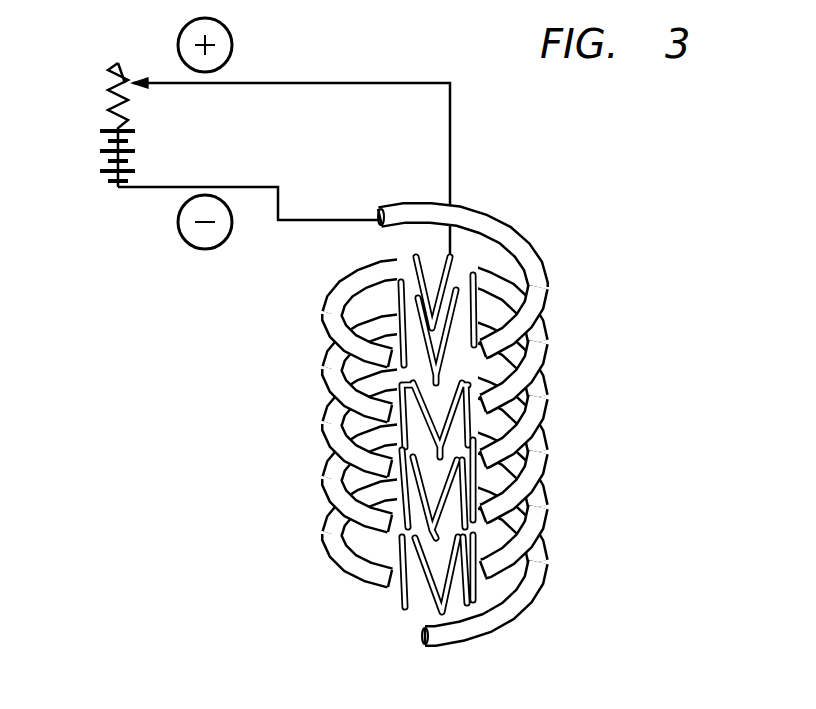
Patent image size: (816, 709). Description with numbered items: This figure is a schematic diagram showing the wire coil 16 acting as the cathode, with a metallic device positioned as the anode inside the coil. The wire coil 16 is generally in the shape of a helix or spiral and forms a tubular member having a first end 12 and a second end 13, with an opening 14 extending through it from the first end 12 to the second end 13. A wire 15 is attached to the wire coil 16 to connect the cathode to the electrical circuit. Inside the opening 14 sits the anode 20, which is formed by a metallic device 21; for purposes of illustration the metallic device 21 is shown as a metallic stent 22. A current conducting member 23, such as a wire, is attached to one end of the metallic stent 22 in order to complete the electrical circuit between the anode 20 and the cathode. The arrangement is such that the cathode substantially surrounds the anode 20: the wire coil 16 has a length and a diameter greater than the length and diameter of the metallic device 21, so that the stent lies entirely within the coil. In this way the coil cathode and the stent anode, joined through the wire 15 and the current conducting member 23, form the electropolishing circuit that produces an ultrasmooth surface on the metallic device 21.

The first end 12 is at (496, 427).
The second end 13 is at (546, 570).
The opening 14 is at (478, 595).
The wire 15 is at (303, 220).
The wire coil 16 is at (546, 507).
The anode 20 is at (423, 386).
The metallic device 21 is at (400, 430).
The metallic stent 22 is at (388, 573).
The current conducting member 23 is at (345, 83).